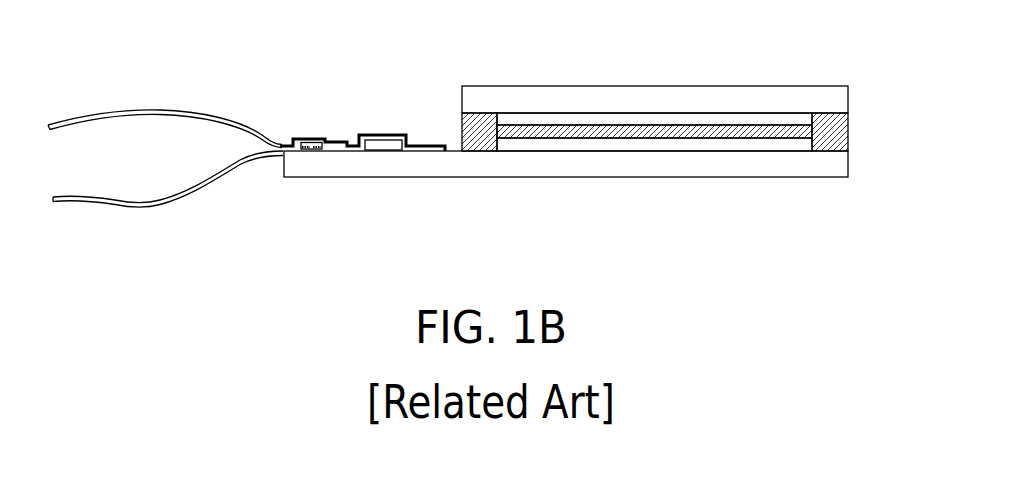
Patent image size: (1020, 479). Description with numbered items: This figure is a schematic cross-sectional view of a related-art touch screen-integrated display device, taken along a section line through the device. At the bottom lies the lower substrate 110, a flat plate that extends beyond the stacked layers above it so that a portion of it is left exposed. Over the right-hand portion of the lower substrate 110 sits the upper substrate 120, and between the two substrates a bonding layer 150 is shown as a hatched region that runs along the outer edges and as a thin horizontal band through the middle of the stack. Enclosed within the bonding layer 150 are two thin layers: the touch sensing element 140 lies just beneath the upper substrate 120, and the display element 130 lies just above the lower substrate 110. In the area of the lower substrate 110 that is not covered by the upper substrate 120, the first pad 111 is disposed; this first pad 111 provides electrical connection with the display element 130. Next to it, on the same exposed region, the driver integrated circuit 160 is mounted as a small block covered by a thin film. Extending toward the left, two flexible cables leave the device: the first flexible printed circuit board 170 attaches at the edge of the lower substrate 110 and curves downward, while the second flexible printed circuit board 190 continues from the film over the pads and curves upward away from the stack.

The lower substrate 110 is at (833, 166).
The upper substrate 120 is at (833, 98).
The display element 130 is at (717, 145).
The touch sensing element 140 is at (568, 118).
The bonding layer 150 is at (833, 129).
The first pad 111 is at (311, 146).
The driver integrated circuit 160 is at (378, 147).
The first flexible printed circuit board 170 is at (80, 199).
The second flexible printed circuit board 190 is at (118, 111).